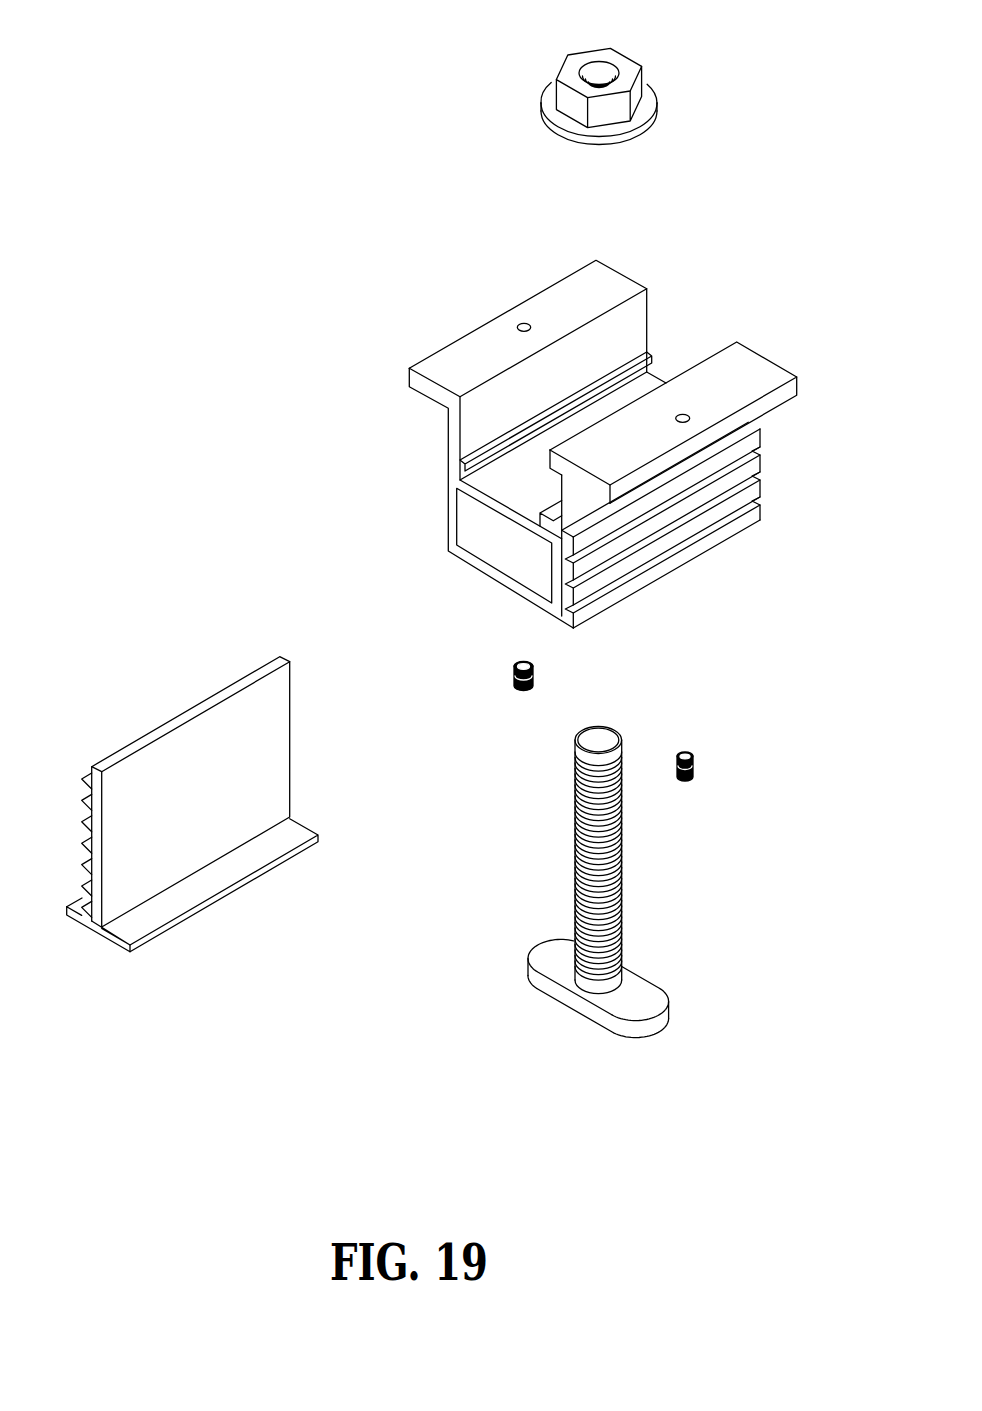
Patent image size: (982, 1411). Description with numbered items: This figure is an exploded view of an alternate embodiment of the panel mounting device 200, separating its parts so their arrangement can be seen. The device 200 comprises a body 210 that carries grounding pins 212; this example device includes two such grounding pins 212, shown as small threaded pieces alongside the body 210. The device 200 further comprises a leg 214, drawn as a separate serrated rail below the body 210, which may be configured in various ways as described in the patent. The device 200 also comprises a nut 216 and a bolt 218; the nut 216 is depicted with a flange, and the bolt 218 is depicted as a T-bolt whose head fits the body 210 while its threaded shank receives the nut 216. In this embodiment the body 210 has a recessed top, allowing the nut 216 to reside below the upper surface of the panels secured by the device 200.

The panel mounting device 200 is at (721, 77).
The body 210 is at (445, 343).
The grounding pin 212 is at (523, 692).
The leg 214 is at (147, 733).
The nut 216 is at (558, 146).
The bolt 218 is at (555, 950).